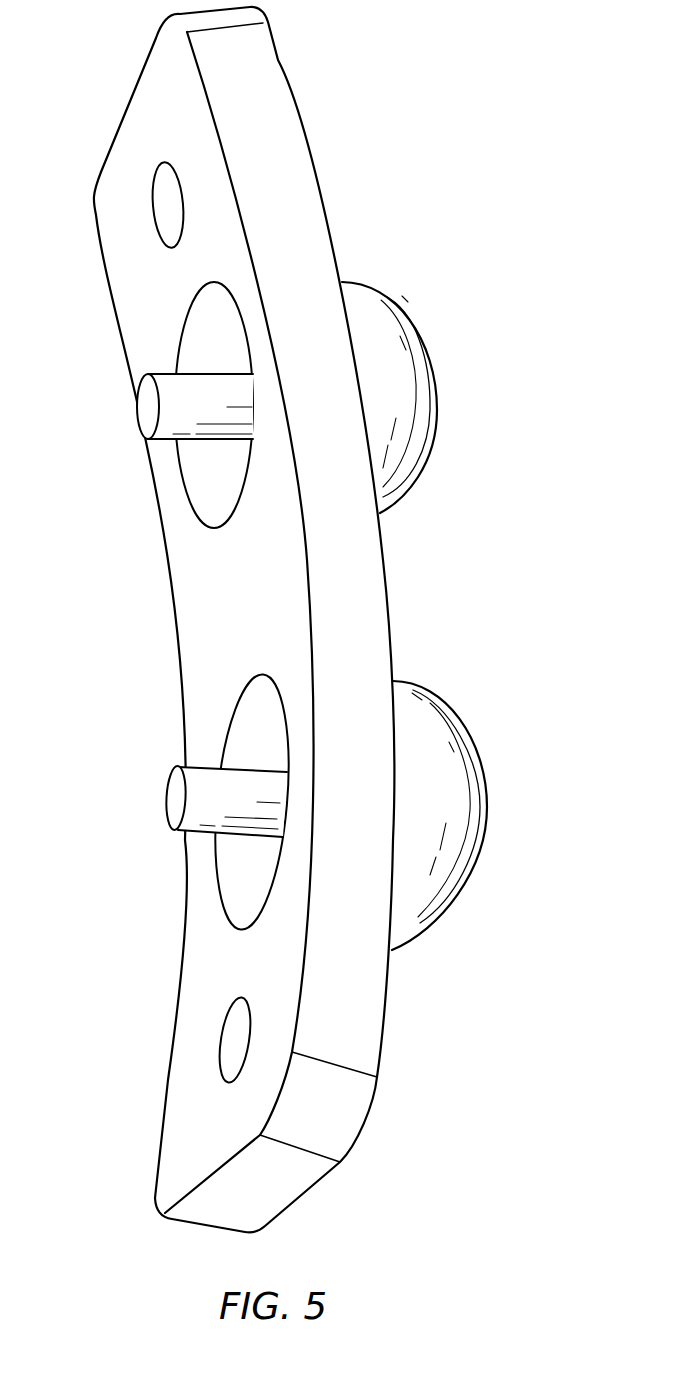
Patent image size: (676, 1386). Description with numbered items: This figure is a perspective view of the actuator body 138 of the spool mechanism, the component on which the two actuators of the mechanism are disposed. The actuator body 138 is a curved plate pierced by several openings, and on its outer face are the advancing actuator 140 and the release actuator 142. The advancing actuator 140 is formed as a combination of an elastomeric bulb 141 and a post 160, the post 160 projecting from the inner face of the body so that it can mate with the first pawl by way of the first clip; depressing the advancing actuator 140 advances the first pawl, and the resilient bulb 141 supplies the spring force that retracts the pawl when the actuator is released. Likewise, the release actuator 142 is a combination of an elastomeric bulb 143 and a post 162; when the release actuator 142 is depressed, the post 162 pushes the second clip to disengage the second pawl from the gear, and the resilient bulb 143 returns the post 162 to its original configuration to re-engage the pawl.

The actuator body 138 is at (358, 586).
The advancing actuator 140 is at (370, 382).
The elastomeric bulb 141 is at (422, 423).
The release actuator 142 is at (400, 808).
The elastomeric bulb 143 is at (452, 840).
The post 160 is at (165, 383).
The post 162 is at (203, 779).